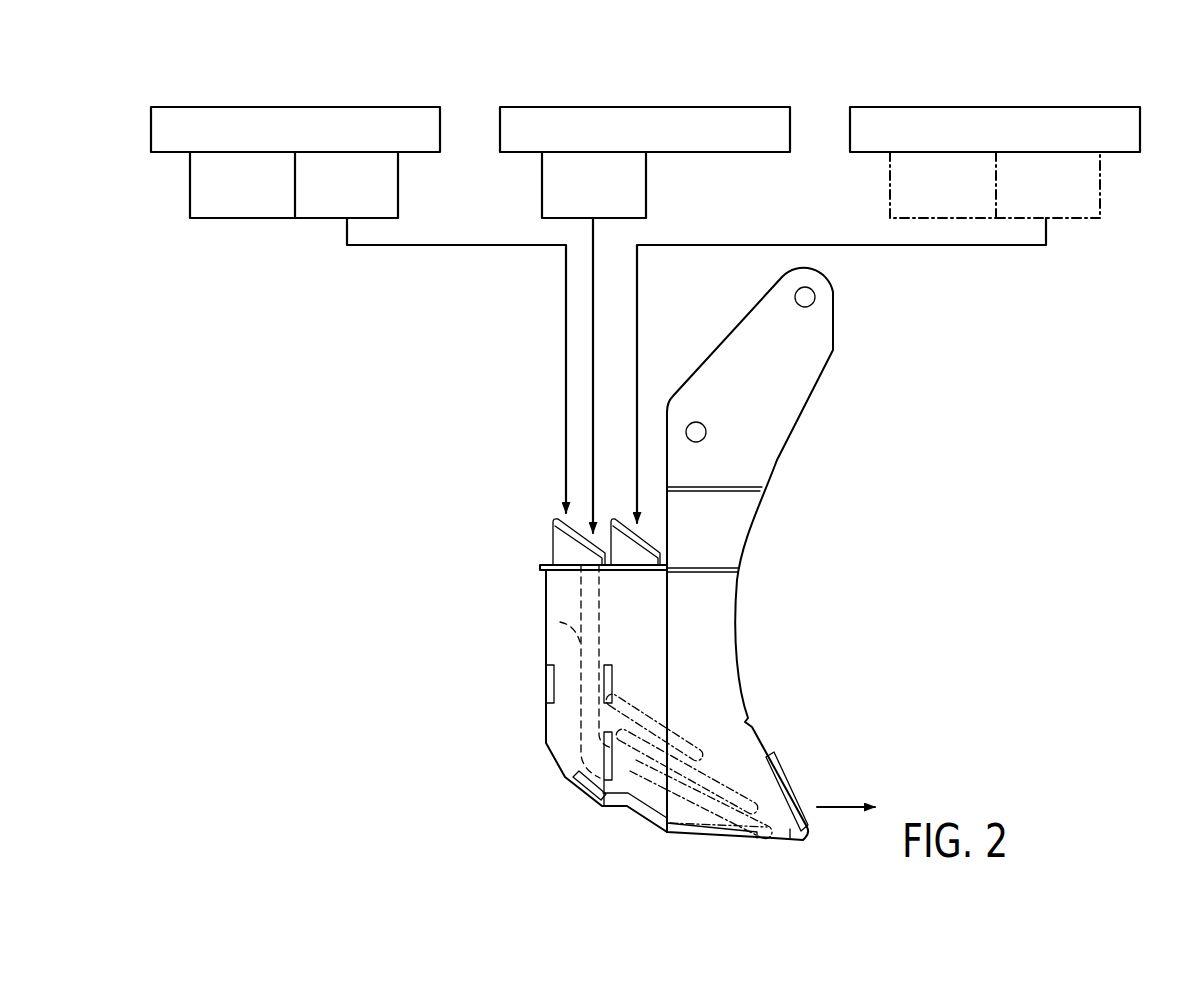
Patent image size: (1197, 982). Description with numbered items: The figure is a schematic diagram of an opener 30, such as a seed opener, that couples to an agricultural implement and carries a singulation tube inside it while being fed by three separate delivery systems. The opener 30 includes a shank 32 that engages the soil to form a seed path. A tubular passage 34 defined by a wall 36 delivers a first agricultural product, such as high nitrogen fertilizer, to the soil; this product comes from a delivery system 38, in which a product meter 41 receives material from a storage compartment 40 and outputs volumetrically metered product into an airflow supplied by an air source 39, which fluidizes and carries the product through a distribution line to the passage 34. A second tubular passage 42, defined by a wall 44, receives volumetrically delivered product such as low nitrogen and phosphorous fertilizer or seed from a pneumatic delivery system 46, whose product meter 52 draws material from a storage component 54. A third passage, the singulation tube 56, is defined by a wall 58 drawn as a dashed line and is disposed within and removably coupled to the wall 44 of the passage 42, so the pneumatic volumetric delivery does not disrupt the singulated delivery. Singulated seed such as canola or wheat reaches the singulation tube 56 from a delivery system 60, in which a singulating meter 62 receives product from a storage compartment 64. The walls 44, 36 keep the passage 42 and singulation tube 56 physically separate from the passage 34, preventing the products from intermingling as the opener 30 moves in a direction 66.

The opener 30 is at (868, 390).
The shank 32 is at (778, 462).
The passage 34 is at (642, 532).
The wall 36 is at (601, 522).
The delivery system 38 is at (973, 143).
The air source 39 is at (890, 187).
The storage compartment 40 is at (995, 107).
The product meter 41 is at (1100, 187).
The passage 42 is at (476, 391).
The wall 44 is at (552, 545).
The delivery system 46 is at (273, 142).
The product meter 52 is at (399, 187).
The storage component 54 is at (295, 107).
The singulation tube 56 is at (595, 625).
The wall 58 is at (560, 622).
The delivery system 60 is at (608, 143).
The singulating meter 62 is at (646, 187).
The storage compartment 64 is at (645, 107).
The direction 66 is at (835, 807).